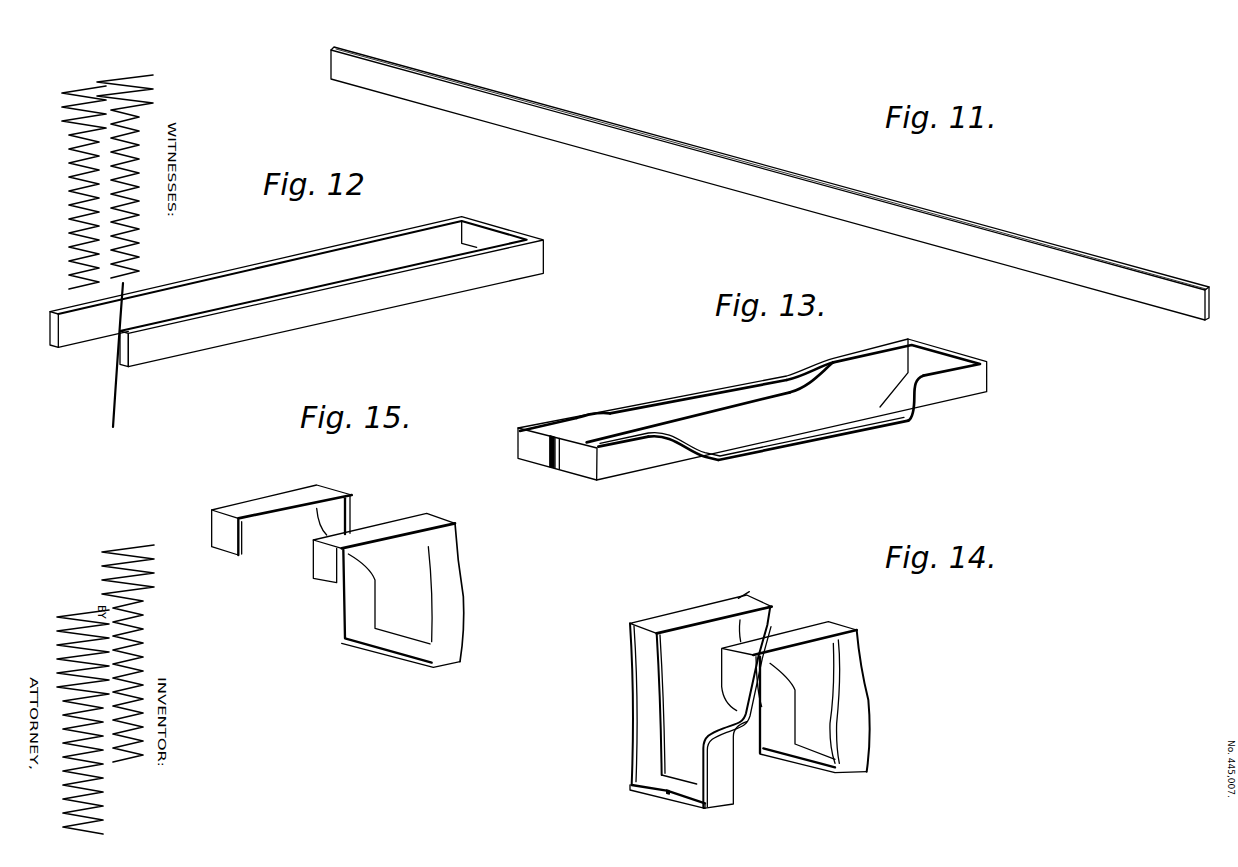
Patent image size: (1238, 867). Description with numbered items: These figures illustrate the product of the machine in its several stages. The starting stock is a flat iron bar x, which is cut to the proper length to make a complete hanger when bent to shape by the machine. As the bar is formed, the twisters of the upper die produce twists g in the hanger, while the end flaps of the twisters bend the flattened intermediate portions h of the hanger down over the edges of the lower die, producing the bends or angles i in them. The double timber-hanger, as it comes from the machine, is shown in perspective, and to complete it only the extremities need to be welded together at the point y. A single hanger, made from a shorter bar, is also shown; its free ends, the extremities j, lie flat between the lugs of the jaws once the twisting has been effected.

In FIG. 11, the iron bar x is at (770, 183).
In FIG. 12, the iron bar x is at (296, 292).
In FIG. 13, the twists g is at (753, 415).
In FIG. 14, the twists g is at (790, 677).
In FIG. 13, the flattened intermediate portions h is at (750, 402).
In FIG. 14, the flattened intermediate portions h is at (757, 628).
In FIG. 14, the bends or angles i is at (630, 623).
In FIG. 15, the extremities of the bar j is at (217, 531).
In FIG. 14, the welding point y is at (666, 792).